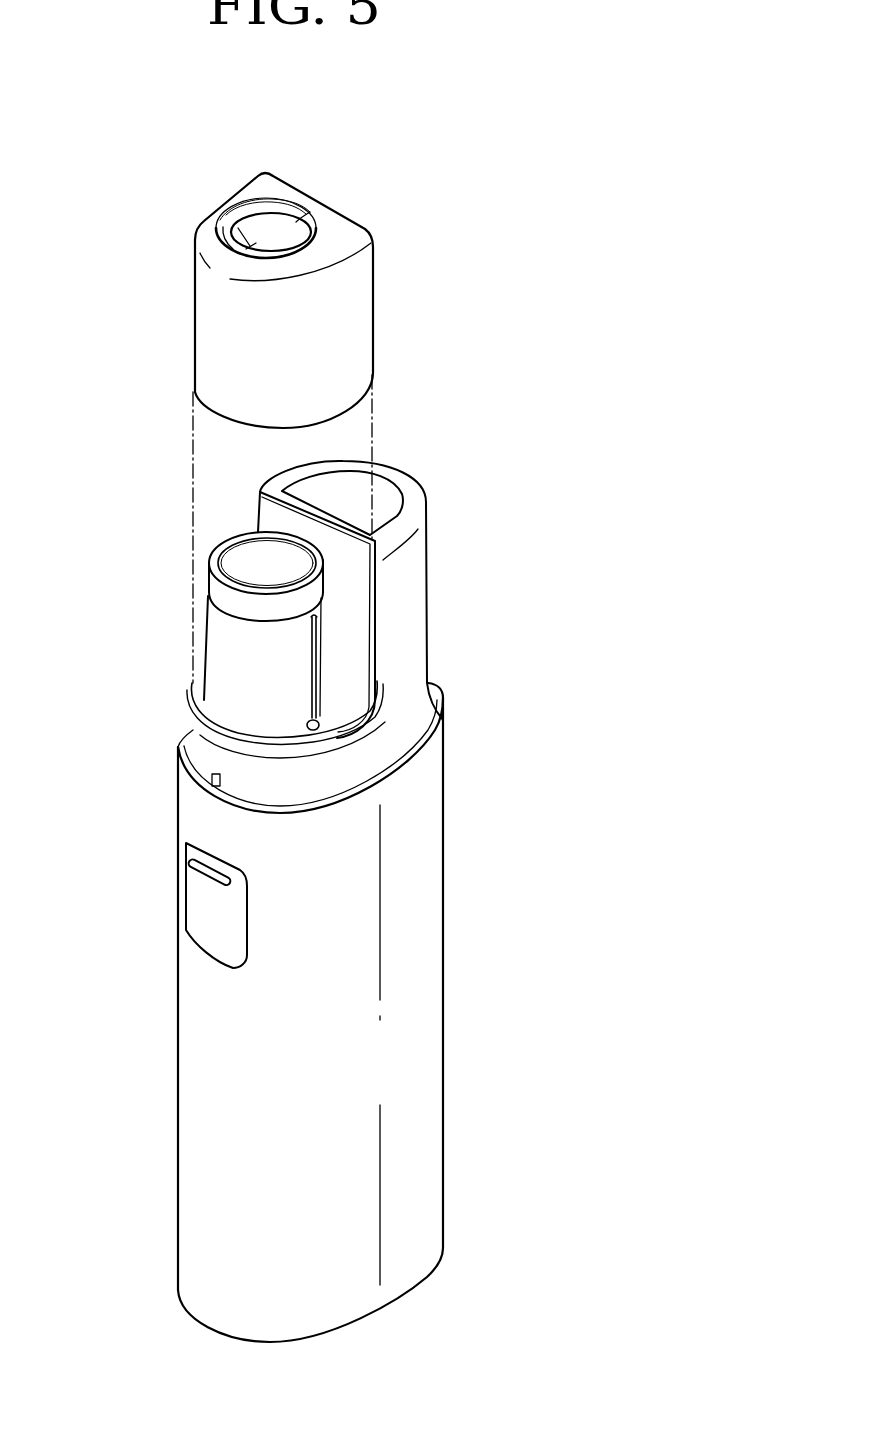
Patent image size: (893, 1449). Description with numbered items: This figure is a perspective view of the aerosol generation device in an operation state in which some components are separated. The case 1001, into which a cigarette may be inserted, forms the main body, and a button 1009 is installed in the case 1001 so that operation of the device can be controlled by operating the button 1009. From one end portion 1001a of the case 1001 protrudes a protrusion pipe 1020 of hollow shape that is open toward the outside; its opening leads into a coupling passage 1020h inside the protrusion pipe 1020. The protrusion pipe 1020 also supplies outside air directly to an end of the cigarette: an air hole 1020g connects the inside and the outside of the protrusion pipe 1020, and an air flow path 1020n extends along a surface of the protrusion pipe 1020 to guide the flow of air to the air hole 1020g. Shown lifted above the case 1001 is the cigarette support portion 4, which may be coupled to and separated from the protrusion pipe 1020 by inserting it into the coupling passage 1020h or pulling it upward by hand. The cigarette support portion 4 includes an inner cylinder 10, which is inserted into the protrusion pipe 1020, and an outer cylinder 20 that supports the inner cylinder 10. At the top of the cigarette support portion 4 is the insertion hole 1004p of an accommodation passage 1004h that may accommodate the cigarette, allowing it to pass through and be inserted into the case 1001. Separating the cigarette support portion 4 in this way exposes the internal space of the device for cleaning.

The cigarette support portion 4 is at (390, 317).
The inner cylinder 10 is at (278, 235).
The outer cylinder 20 is at (207, 322).
The accommodation passage 1004h is at (238, 227).
The insertion hole 1004p is at (312, 228).
The case 1001 is at (427, 892).
The one end portion of the case 1001a is at (413, 577).
The button 1009 is at (210, 915).
The protrusion pipe 1020 is at (236, 603).
The coupling passage 1020h is at (237, 566).
The air flow path 1020n is at (318, 638).
The air hole 1020g is at (319, 728).